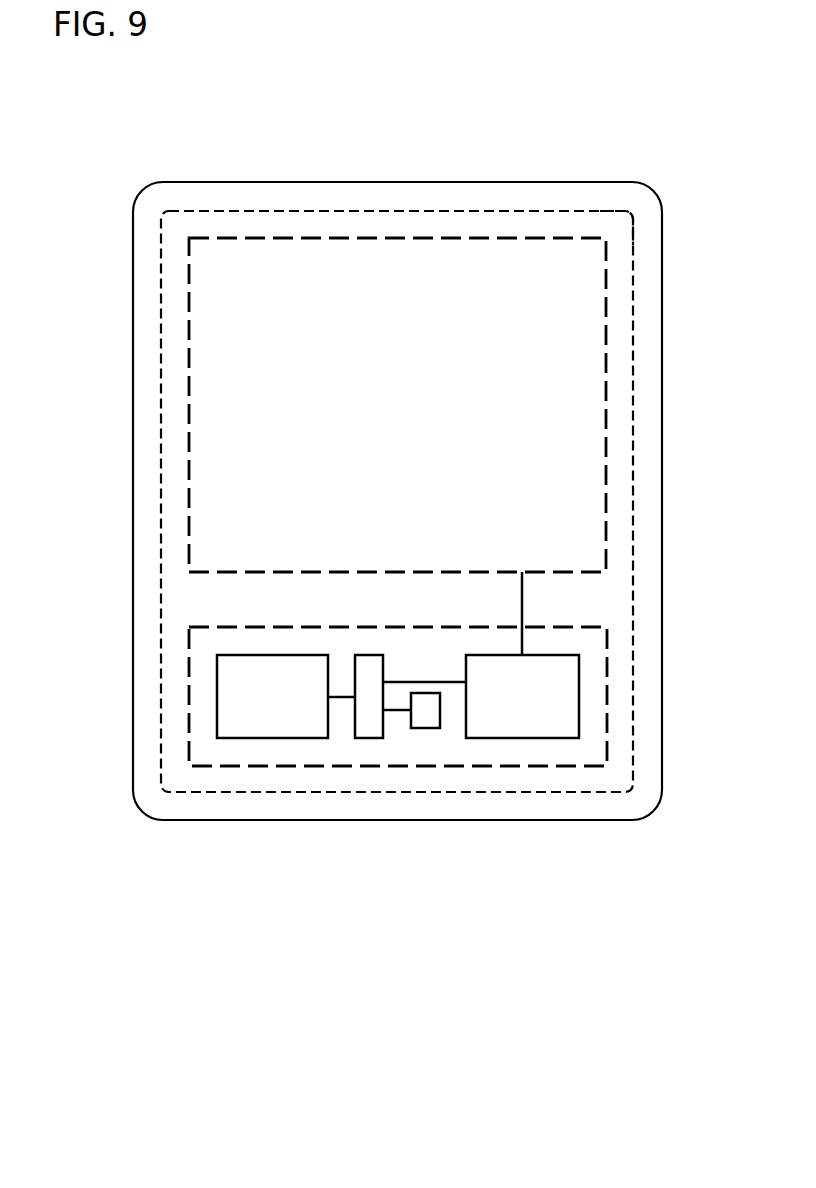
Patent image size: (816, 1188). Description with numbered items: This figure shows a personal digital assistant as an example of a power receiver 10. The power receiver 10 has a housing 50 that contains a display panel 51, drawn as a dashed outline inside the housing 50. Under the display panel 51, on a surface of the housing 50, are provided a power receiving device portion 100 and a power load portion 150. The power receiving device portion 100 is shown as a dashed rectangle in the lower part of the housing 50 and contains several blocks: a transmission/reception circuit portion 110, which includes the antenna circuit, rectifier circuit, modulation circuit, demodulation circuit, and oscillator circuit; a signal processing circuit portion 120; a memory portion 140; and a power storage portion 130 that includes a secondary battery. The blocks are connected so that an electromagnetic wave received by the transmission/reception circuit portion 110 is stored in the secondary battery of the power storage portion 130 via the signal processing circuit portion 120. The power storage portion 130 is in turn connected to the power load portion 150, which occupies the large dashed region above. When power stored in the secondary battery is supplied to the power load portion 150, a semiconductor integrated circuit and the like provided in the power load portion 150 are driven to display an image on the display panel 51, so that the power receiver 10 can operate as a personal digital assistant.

The power receiver 10 is at (355, 182).
The housing 50 is at (433, 198).
The display panel 51 is at (613, 212).
The power receiving device portion 100 is at (582, 767).
The transmission/reception circuit portion 110 is at (238, 726).
The signal processing circuit portion 120 is at (372, 722).
The power storage portion 130 is at (515, 720).
The memory portion 140 is at (427, 722).
The power load portion 150 is at (248, 237).